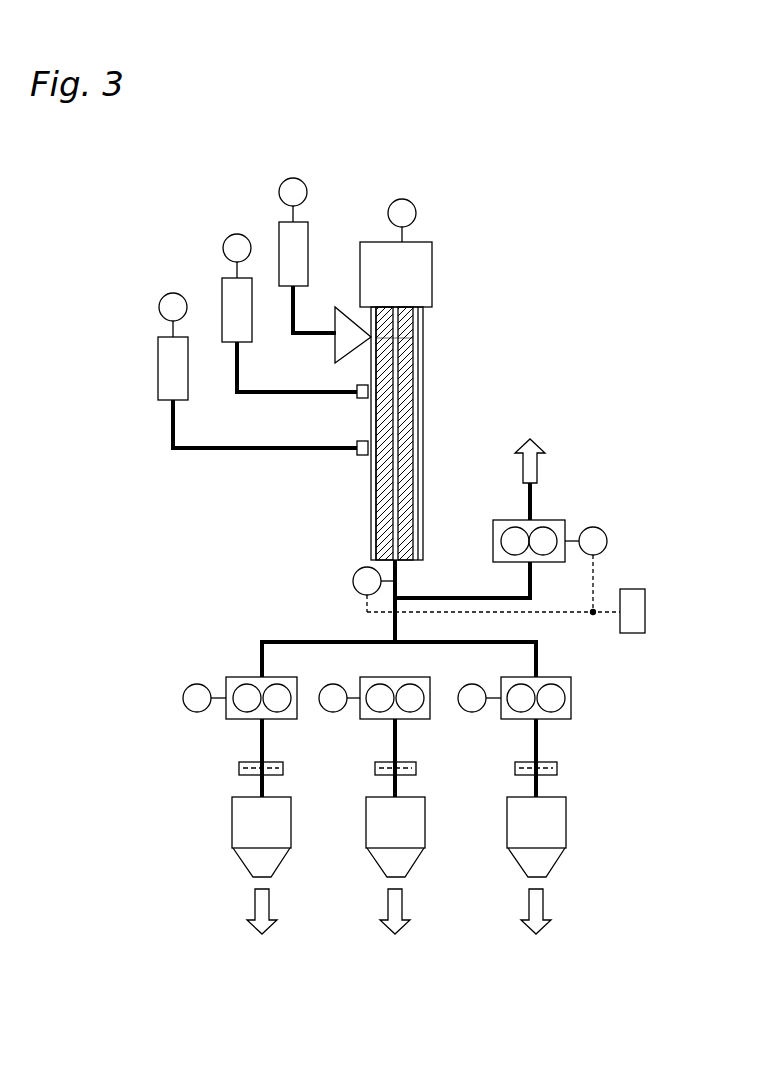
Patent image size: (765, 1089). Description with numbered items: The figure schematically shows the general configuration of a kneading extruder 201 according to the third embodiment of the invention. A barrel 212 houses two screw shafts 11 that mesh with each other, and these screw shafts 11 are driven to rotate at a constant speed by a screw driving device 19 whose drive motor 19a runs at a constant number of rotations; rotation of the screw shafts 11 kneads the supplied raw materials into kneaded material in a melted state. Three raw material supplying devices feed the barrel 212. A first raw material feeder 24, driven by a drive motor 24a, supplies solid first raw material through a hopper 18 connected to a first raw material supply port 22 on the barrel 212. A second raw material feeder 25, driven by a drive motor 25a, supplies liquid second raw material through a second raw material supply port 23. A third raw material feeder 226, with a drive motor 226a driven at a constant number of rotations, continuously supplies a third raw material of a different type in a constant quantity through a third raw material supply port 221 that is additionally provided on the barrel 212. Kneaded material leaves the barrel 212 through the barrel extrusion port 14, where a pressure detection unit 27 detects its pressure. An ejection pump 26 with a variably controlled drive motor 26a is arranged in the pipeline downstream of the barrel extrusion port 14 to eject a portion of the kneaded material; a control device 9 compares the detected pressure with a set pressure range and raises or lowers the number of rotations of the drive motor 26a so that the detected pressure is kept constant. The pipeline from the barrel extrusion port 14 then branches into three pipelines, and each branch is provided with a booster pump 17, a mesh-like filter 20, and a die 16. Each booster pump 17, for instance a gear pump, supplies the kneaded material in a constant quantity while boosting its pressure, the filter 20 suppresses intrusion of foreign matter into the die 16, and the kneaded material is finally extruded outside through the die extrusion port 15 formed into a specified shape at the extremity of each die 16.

The kneading extruder 201 is at (166, 216).
The drive motor 24a is at (279, 192).
The first raw material feeder 24 is at (279, 250).
The drive motor 25a is at (223, 248).
The second raw material feeder 25 is at (222, 305).
The drive motor 226a is at (159, 307).
The third raw material feeder 226 is at (158, 372).
The hopper 18 is at (335, 352).
The drive motor 19a is at (388, 216).
The screw driving device 19 is at (432, 270).
The barrel 212 is at (371, 512).
The screw shaft 11 is at (405, 490).
The first raw material supply port 22 is at (395, 339).
The second raw material supply port 23 is at (383, 396).
The third raw material supply port 221 is at (390, 452).
The barrel extrusion port 14 is at (398, 562).
The pressure detection unit 27 is at (353, 583).
The control device 9 is at (506, 611).
The ejection pump 26 is at (553, 519).
The drive motor 26a is at (593, 527).
The booster pump 17 is at (283, 720).
The filter 20 is at (239, 768).
The die 16 is at (232, 823).
The die extrusion port 15 is at (257, 879).